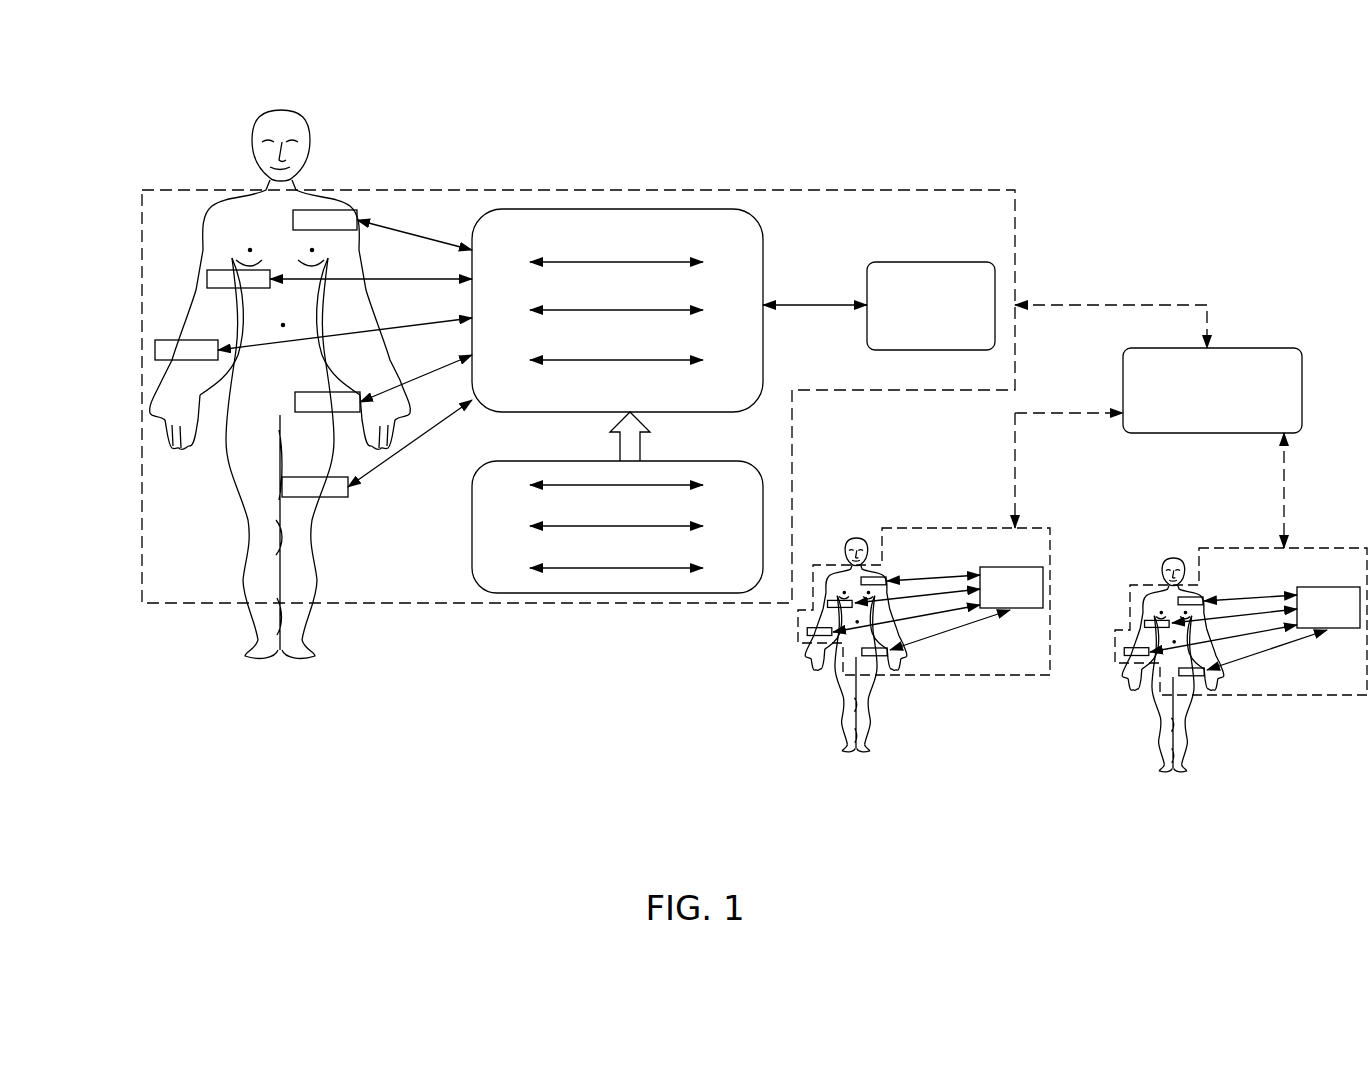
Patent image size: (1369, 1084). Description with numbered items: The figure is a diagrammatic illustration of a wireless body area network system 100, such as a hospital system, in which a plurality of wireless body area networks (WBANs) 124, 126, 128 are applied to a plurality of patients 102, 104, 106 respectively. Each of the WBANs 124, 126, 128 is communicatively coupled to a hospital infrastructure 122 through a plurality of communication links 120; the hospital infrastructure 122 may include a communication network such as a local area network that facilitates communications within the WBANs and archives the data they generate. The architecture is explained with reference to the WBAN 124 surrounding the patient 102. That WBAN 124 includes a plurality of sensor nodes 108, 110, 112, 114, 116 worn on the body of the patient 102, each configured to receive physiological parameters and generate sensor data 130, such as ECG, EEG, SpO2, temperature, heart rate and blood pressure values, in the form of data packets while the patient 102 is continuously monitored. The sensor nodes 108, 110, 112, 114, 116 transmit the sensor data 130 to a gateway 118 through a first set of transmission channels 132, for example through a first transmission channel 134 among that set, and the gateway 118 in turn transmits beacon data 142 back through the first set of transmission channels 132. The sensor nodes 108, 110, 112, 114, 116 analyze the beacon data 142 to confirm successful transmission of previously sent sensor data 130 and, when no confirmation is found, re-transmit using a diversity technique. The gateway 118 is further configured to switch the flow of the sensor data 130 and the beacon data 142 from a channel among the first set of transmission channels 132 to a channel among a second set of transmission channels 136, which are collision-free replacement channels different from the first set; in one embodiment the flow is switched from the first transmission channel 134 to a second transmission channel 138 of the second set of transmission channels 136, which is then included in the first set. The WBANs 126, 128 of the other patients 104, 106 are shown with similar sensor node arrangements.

The wireless body area network system 100 is at (202, 130).
The patient 102 is at (308, 130).
The patient 104 is at (797, 703).
The patient 106 is at (1130, 706).
The sensor node 108 is at (320, 210).
The sensor node 110 is at (220, 270).
The sensor node 112 is at (170, 340).
The sensor node 114 is at (310, 392).
The sensor node 116 is at (330, 497).
The gateway 118 is at (935, 262).
The communication links 120 is at (1078, 306).
The hospital infrastructure 122 is at (1255, 348).
The wireless body area network 124 is at (784, 172).
The wireless body area network 126 is at (953, 690).
The wireless body area network 128 is at (1240, 745).
The sensor data 130 is at (415, 290).
The first set of transmission channels 132 is at (617, 209).
The first transmission channel 134 is at (650, 262).
The second set of transmission channels 136 is at (593, 593).
The second transmission channel 138 is at (563, 485).
The beacon data 142 is at (818, 307).